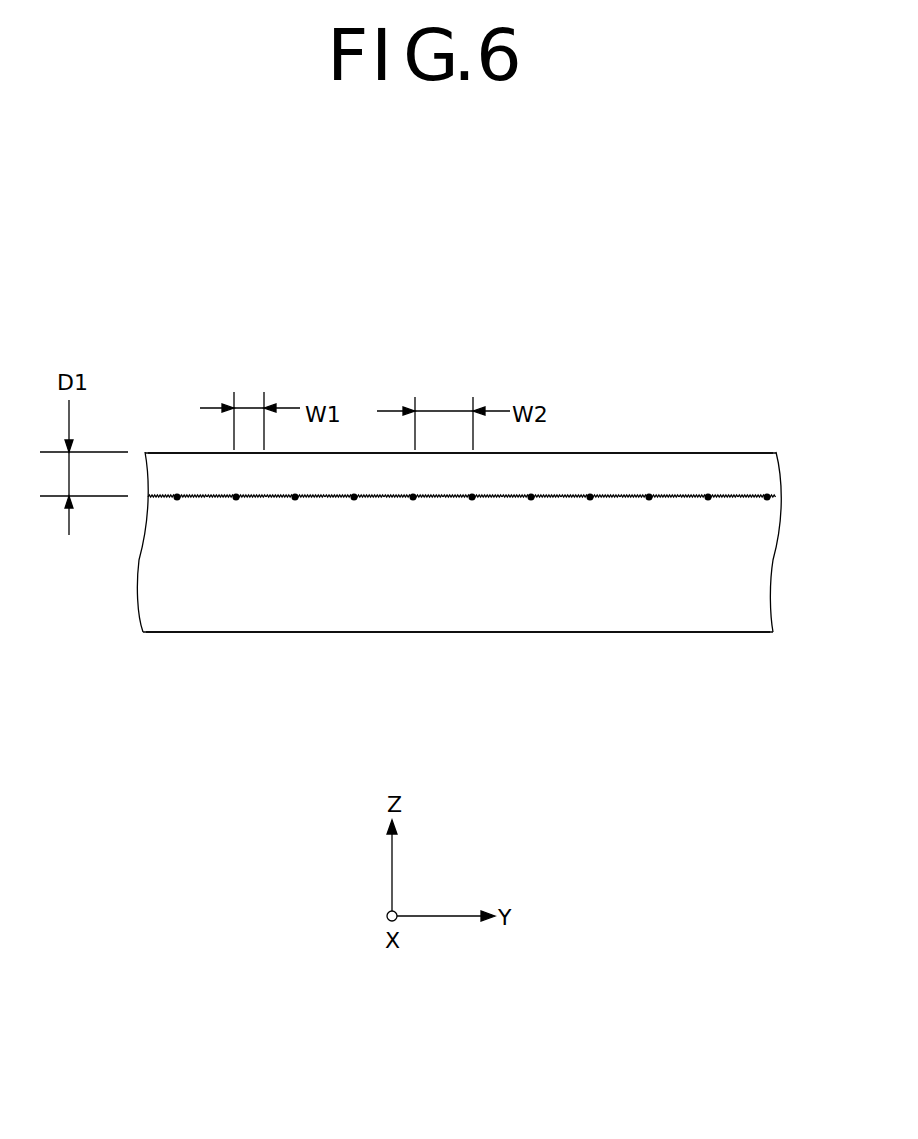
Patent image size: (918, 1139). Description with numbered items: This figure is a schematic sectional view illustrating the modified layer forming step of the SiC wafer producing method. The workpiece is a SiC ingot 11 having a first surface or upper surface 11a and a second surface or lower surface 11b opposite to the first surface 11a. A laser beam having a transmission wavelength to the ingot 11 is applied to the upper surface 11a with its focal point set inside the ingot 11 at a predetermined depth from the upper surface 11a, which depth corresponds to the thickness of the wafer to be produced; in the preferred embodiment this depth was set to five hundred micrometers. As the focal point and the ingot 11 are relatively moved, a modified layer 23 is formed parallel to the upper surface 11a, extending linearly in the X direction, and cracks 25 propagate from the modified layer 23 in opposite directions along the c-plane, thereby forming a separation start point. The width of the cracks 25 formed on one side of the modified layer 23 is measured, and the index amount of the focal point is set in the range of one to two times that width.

The SiC ingot 11 is at (734, 446).
The first surface 11a is at (639, 453).
The second surface 11b is at (598, 634).
The modified layer 23 is at (177, 500).
The cracks 25 is at (193, 500).